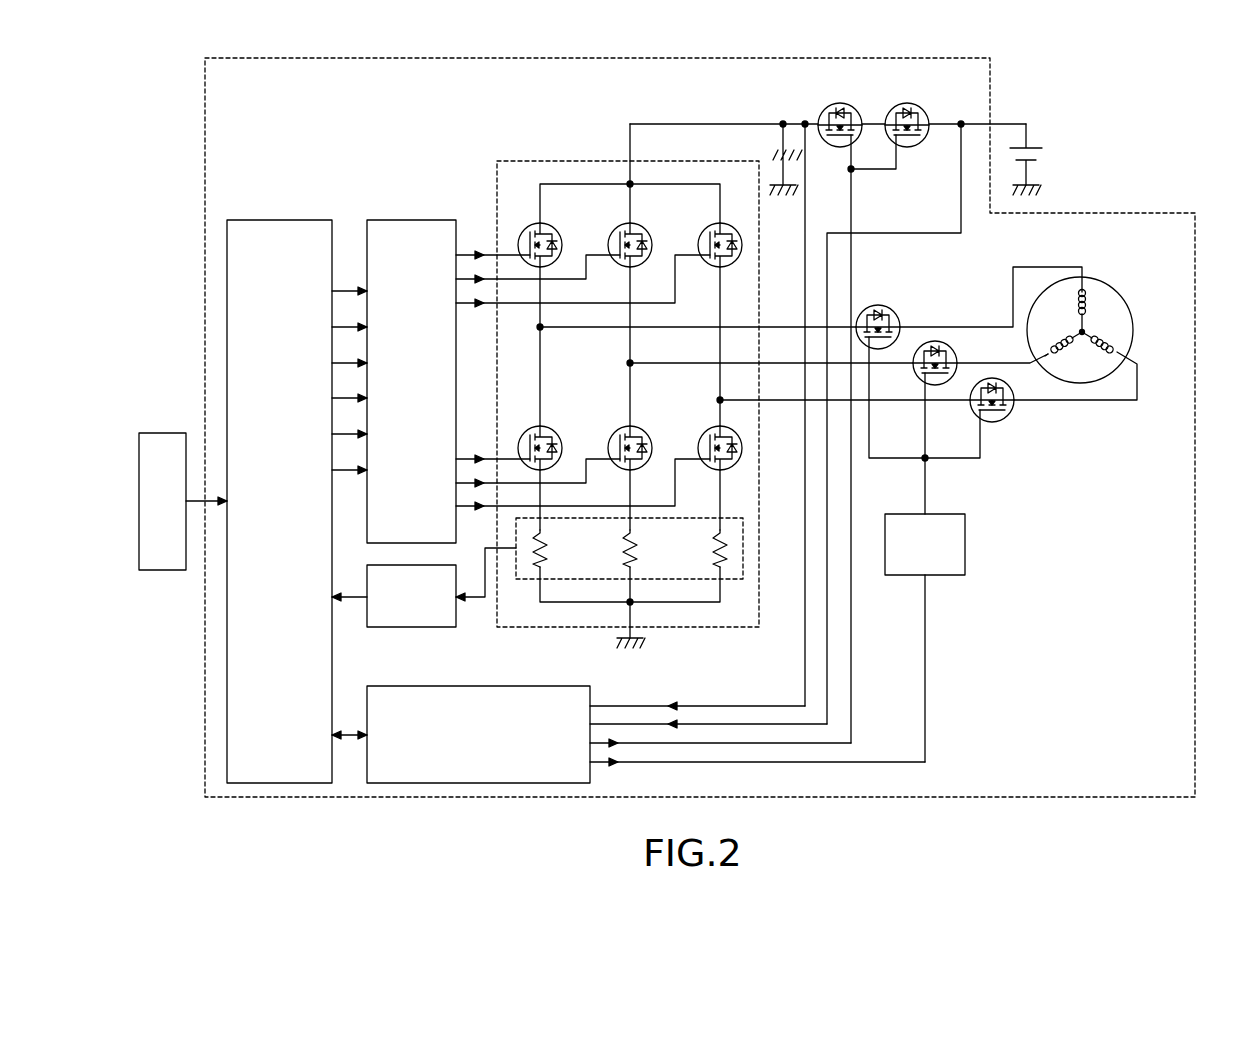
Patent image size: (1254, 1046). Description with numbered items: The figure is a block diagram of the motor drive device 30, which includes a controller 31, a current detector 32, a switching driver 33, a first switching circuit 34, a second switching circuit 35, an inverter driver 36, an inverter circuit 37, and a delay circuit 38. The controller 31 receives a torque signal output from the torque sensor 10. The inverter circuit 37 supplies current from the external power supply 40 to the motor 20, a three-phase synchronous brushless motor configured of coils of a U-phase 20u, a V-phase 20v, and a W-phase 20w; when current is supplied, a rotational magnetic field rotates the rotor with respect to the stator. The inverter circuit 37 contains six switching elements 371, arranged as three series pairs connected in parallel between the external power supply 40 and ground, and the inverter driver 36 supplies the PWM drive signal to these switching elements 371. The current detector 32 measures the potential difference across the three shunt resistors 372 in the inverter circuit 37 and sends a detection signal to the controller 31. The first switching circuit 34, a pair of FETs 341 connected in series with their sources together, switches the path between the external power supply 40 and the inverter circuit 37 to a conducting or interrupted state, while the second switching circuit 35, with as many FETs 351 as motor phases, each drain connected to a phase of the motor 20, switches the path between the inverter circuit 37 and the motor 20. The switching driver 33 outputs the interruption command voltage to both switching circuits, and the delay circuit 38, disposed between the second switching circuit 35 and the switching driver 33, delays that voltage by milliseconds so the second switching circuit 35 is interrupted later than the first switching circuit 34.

The torque sensor 10 is at (165, 433).
The motor 20 is at (1108, 332).
The U-phase 20u is at (1092, 297).
The V-phase 20v is at (1063, 356).
The W-phase 20w is at (1112, 347).
The motor drive device 30 is at (205, 112).
The controller 31 is at (290, 220).
The current detector 32 is at (425, 627).
The switching driver 33 is at (545, 686).
The first switching circuit 34 is at (828, 406).
The FETs 341 is at (855, 90).
The second switching circuit 35 is at (838, 384).
The FETs 351 is at (880, 350).
The inverter driver 36 is at (428, 220).
The inverter circuit 37 is at (548, 161).
The switching elements 371 is at (549, 226).
The shunt resistors 372 is at (720, 590).
The delay circuit 38 is at (948, 514).
The external power supply 40 is at (1038, 148).